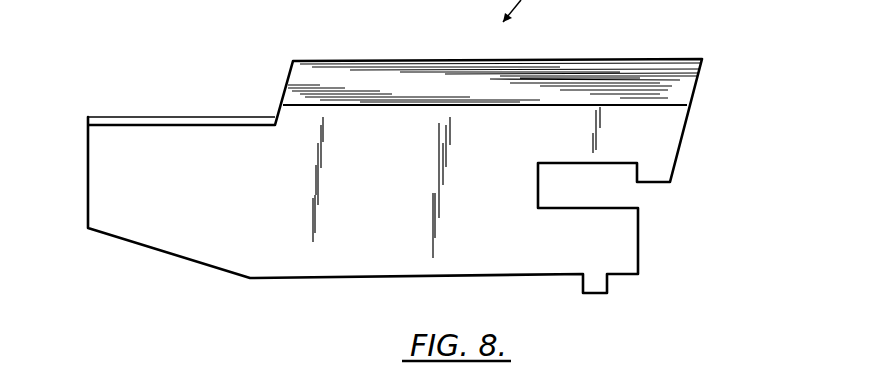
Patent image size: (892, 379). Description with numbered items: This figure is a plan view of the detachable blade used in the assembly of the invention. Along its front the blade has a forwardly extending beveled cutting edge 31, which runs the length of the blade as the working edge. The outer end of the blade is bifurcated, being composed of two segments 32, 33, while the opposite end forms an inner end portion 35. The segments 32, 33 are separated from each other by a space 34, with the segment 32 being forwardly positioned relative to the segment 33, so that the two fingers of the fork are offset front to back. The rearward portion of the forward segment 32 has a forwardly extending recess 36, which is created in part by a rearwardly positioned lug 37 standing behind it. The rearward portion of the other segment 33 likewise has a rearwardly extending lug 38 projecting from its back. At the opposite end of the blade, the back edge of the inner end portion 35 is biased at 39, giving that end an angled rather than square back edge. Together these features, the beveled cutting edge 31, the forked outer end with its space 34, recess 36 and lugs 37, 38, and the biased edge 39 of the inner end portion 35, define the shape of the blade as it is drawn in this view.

The beveled cutting edge 31 is at (627, 73).
The segment 32 is at (668, 120).
The segment 33 is at (628, 242).
The space 34 is at (608, 185).
The inner end portion 35 is at (137, 172).
The recess 36 is at (588, 162).
The lug 37 is at (654, 171).
The lug 38 is at (600, 281).
The biased back edge 39 is at (178, 257).